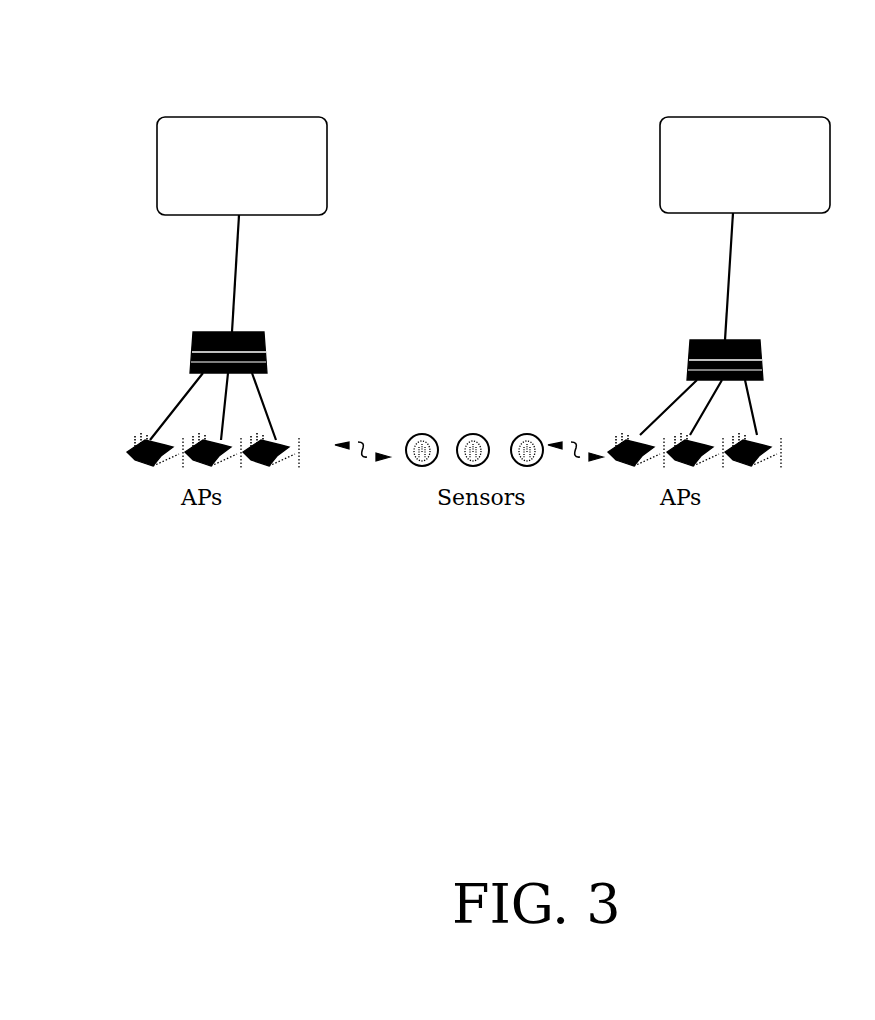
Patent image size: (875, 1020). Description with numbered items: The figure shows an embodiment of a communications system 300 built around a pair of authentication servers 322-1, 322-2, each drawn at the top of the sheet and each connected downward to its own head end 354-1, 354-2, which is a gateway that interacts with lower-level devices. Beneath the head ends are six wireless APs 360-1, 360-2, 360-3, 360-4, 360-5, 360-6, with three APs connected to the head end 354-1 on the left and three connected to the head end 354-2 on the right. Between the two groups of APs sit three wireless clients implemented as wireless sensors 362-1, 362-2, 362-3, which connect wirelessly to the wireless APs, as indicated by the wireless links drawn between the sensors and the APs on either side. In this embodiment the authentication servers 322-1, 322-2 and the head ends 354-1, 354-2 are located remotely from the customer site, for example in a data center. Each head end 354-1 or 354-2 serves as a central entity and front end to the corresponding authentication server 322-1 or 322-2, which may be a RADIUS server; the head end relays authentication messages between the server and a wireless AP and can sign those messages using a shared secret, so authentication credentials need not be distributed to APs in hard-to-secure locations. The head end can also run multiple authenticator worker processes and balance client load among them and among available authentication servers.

The communications system 300 is at (512, 78).
The authentication server 322-1 is at (296, 197).
The authentication server 322-2 is at (800, 196).
The head end 354-1 is at (192, 345).
The head end 354-2 is at (690, 343).
The wireless AP 360-1 is at (124, 447).
The wireless AP 360-2 is at (196, 447).
The wireless AP 360-3 is at (310, 436).
The wireless AP 360-4 is at (616, 455).
The wireless AP 360-5 is at (704, 466).
The wireless AP 360-6 is at (792, 444).
The wireless sensor 362-1 is at (414, 436).
The wireless sensor 362-2 is at (471, 435).
The wireless sensor 362-3 is at (523, 436).